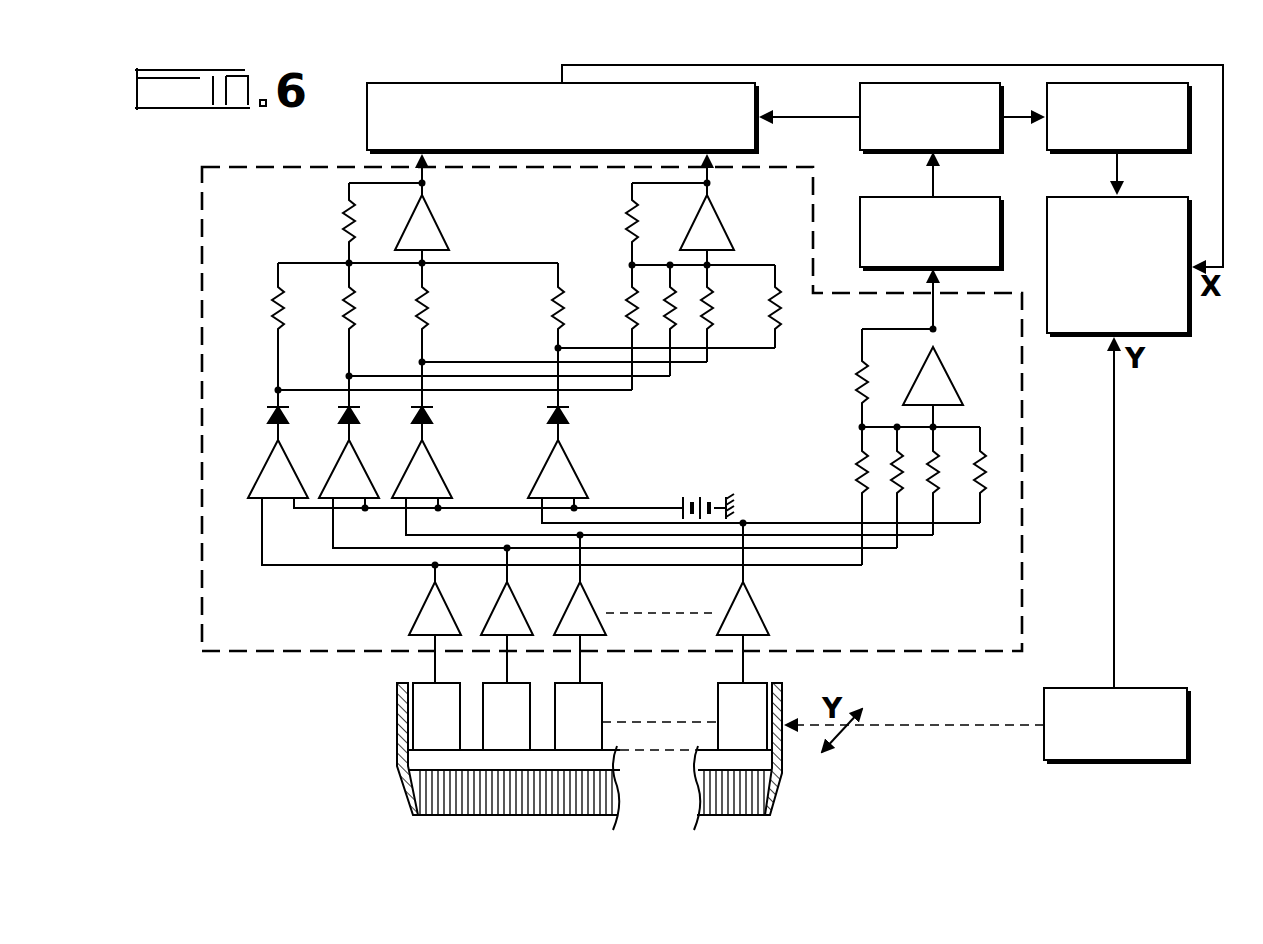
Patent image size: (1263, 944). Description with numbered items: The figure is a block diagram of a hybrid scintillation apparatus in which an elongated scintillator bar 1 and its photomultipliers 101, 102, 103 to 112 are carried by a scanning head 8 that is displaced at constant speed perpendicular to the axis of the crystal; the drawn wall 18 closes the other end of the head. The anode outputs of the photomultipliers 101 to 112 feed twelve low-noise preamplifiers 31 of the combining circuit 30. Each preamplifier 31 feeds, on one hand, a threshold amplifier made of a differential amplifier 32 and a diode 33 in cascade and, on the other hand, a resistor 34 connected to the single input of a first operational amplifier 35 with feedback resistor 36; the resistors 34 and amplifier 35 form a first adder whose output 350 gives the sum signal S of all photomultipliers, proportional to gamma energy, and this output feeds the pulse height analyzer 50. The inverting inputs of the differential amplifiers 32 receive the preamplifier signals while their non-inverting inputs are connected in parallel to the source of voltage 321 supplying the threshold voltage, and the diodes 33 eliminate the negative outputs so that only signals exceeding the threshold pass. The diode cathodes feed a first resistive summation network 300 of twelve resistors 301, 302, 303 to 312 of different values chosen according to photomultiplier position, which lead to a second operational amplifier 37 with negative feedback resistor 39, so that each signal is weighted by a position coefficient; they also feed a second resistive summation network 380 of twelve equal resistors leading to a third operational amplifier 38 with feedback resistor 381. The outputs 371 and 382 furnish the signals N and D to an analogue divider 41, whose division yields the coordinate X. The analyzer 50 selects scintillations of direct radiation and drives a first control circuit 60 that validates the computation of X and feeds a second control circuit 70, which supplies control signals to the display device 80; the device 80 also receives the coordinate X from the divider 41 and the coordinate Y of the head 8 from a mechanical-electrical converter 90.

The scintillator bar 1 is at (418, 763).
The scanning head 8 is at (393, 700).
The light shield wall 18 is at (781, 777).
The combining circuit 30 is at (202, 270).
The preamplifier 31 is at (768, 616).
The differential amplifier 32 is at (540, 472).
The diode 33 is at (545, 422).
The resistor 34 is at (864, 500).
The first operational amplifier 35 is at (947, 362).
The feedback resistor 36 is at (862, 382).
The second operational amplifier 37 is at (448, 222).
The third operational amplifier 38 is at (734, 222).
The negative feedback resistor 39 is at (345, 236).
The analogue divider 41 is at (367, 134).
The pulse height analyzer 50 is at (931, 216).
The first control circuit 60 is at (860, 96).
The second control circuit 70 is at (1080, 150).
The display device 80 is at (1170, 197).
The mechanical-electrical converter 90 is at (1078, 688).
The photomultiplier 101 is at (466, 702).
The photomultiplier 102 is at (534, 702).
The photomultiplier 103 is at (606, 702).
The photomultiplier 112 is at (718, 702).
The first resistive summation network 300 is at (391, 334).
The resistor 301 is at (276, 326).
The resistor 302 is at (347, 326).
The resistor 303 is at (420, 326).
The resistor 312 is at (556, 320).
The source of voltage 321 is at (683, 506).
The output 350 is at (938, 327).
The output 371 is at (426, 184).
The second resistive summation network 380 is at (634, 336).
The negative feedback resistor 381 is at (632, 237).
The output 382 is at (711, 183).